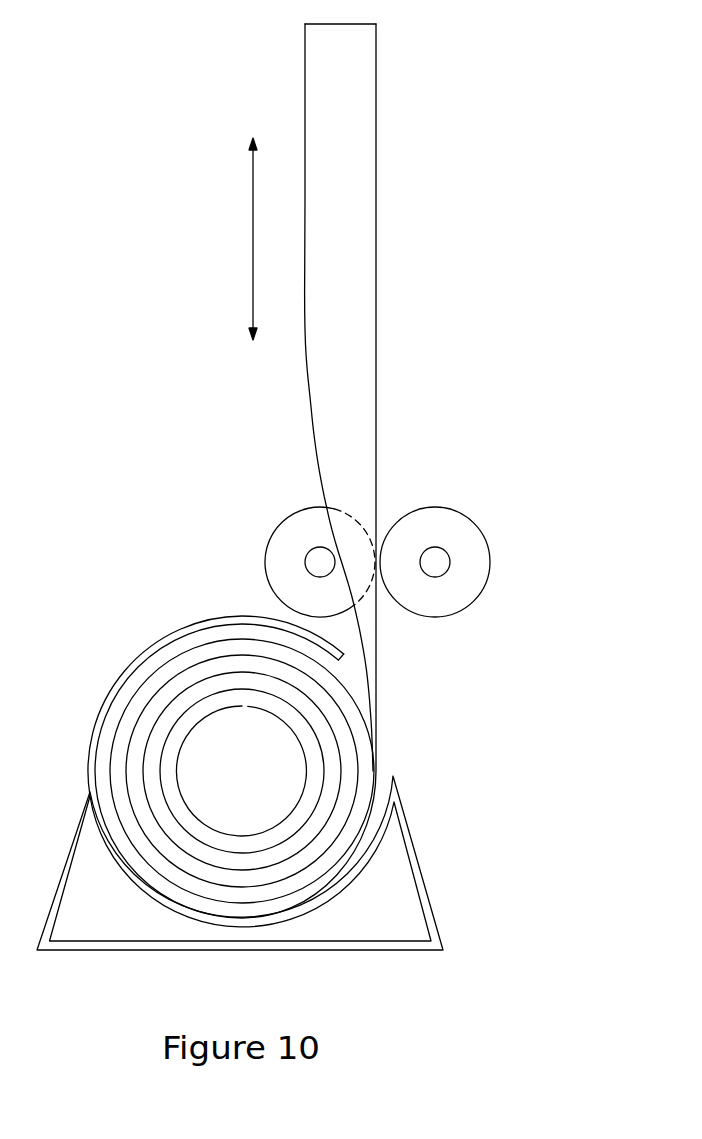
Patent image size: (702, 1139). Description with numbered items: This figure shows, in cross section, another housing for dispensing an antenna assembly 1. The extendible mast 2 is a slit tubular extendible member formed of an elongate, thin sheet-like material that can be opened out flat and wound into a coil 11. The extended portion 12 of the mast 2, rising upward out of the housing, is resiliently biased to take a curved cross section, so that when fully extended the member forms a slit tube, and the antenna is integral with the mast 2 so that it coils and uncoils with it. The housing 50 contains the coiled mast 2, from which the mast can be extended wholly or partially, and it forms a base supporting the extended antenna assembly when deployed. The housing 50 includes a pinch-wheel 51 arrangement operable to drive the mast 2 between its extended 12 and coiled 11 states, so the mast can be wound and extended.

The assembly 1 is at (412, 250).
The extendible mast 2 is at (365, 360).
The coil 11 is at (110, 732).
The extended portion 12 is at (353, 180).
The housing 50 is at (437, 913).
The pinch-wheel 51 is at (283, 538).